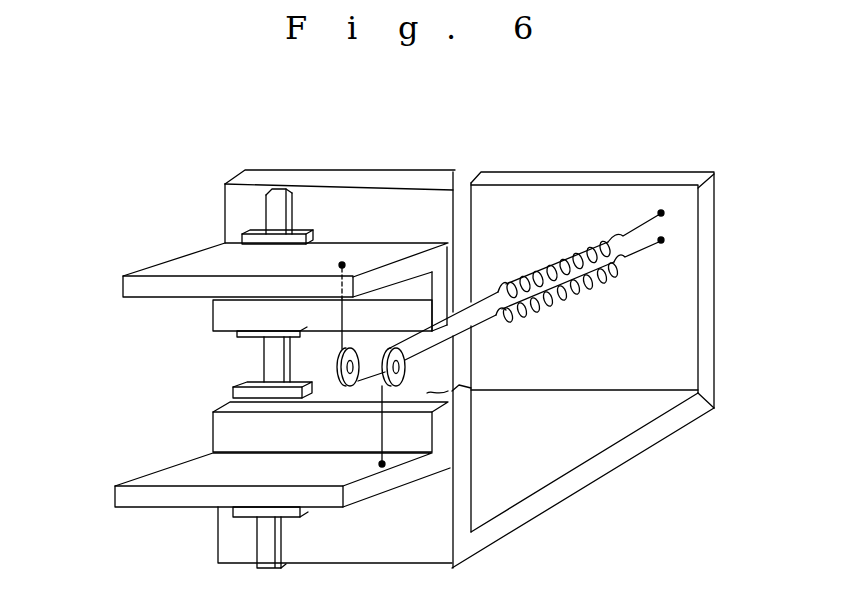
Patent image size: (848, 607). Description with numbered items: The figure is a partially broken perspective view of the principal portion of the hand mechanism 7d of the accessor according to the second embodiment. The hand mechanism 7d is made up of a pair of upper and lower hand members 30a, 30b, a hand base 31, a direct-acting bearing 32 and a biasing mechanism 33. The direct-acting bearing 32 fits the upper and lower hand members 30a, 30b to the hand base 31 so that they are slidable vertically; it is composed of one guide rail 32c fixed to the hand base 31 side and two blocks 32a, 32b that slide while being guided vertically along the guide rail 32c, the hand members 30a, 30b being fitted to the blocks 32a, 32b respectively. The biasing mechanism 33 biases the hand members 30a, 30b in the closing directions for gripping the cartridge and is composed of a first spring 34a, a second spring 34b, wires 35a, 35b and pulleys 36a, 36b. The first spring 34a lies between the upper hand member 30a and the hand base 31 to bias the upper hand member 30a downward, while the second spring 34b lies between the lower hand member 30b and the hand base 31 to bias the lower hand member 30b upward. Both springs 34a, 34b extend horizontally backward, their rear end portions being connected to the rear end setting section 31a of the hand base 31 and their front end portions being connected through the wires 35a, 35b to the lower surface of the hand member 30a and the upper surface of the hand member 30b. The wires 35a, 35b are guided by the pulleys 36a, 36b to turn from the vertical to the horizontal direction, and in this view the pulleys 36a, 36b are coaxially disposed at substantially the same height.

The hand mechanism 7d is at (131, 311).
The upper hand member 30a is at (182, 263).
The lower hand member 30b is at (142, 480).
The hand base 31 is at (643, 433).
The rear end setting section 31a is at (707, 205).
The direct-acting bearing 32 is at (229, 202).
The block 32a is at (298, 232).
The block 32b is at (223, 393).
The guide rail 32c is at (276, 200).
The biasing mechanism 33 is at (567, 205).
The first spring 34a is at (598, 230).
The second spring 34b is at (607, 268).
The wire 35a is at (333, 339).
The wire 35b is at (383, 433).
The pulley 36a is at (333, 369).
The pulley 36b is at (405, 368).